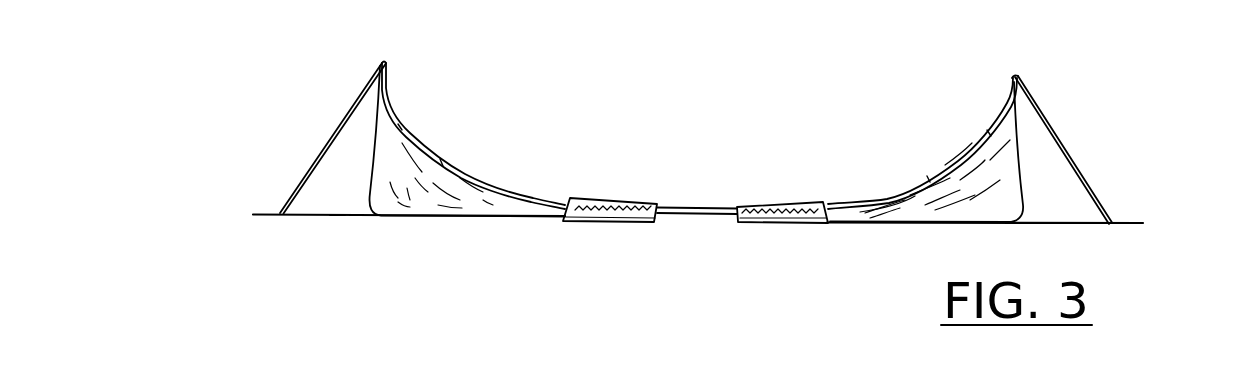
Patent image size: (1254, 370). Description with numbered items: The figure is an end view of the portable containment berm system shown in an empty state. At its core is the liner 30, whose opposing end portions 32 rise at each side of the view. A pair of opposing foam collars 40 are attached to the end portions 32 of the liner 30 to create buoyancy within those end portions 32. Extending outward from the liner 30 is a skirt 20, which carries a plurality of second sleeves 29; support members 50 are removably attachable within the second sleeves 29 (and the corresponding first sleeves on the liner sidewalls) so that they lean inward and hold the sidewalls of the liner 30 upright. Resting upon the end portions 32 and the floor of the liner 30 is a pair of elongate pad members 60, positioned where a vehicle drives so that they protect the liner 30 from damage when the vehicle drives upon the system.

The skirt 20 is at (265, 213).
The second sleeve 29 is at (337, 215).
The liner 30 is at (911, 224).
The end portion 32 is at (890, 212).
The foam collar 40 is at (533, 197).
The support member 50 is at (335, 117).
The pad member 60 is at (623, 203).